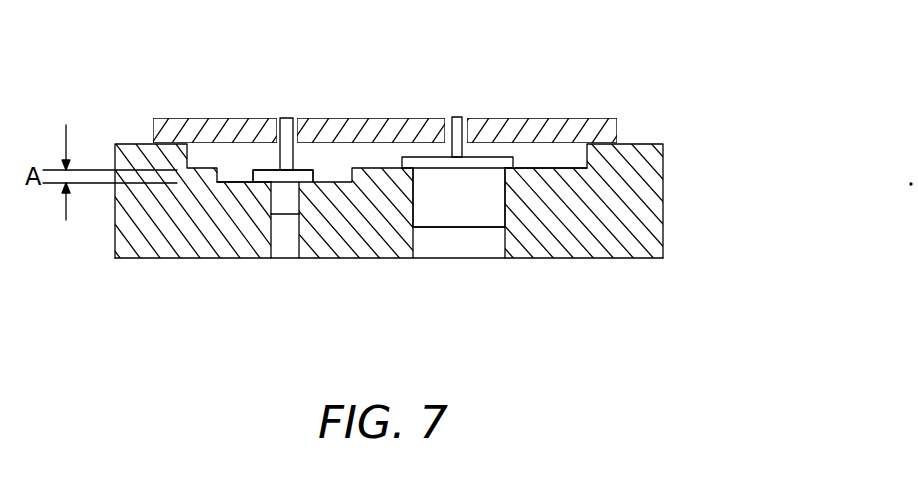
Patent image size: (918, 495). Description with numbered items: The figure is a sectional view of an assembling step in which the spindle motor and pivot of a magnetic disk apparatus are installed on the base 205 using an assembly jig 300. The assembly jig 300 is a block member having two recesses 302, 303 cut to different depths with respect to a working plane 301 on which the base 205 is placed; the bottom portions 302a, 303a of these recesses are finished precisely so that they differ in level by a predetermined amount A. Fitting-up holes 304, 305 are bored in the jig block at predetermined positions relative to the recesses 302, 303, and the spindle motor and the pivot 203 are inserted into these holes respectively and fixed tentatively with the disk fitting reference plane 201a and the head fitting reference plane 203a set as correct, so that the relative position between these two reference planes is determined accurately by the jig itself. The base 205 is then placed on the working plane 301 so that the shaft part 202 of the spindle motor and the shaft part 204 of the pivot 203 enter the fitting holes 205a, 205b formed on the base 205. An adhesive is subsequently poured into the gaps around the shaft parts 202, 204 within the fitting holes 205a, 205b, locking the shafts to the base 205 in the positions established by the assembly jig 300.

The disk fitting reference plane 201a is at (560, 214).
The shaft part 202 is at (455, 118).
The pivot 203 is at (295, 207).
The head fitting reference plane 203a is at (257, 186).
The shaft part 204 is at (293, 143).
The base 205 is at (599, 132).
The fitting hole 205a is at (466, 120).
The fitting hole 205b is at (275, 119).
The assembly jig 300 is at (700, 160).
The working plane 301 is at (477, 200).
The recess 302 is at (579, 161).
The bottom portion 302a is at (542, 168).
The recess 303 is at (189, 143).
The bottom portion 303a is at (250, 185).
The fitting-up hole 304 is at (490, 245).
The fitting-up hole 305 is at (286, 247).